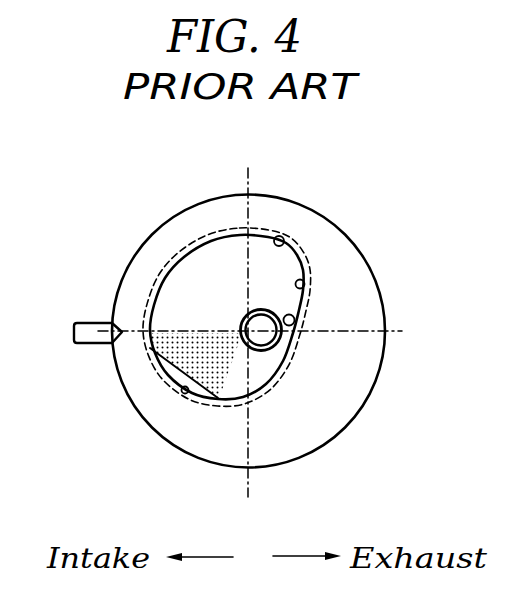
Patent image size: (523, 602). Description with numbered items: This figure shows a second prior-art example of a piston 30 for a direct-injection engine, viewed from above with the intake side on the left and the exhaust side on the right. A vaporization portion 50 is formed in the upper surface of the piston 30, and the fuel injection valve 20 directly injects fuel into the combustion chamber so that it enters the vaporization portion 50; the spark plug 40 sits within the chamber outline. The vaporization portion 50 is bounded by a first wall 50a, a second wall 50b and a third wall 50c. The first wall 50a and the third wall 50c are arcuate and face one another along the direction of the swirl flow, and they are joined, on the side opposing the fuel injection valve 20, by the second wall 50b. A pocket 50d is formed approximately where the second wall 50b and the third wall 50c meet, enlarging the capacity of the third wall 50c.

The fuel injection valve 20 is at (76, 363).
The piston 30 is at (270, 331).
The spark plug 40 is at (301, 417).
The vaporization portion 50 is at (180, 317).
The first wall 50a is at (185, 393).
The second wall 50b is at (297, 313).
The third wall 50c is at (280, 236).
The pocket 50d is at (304, 290).